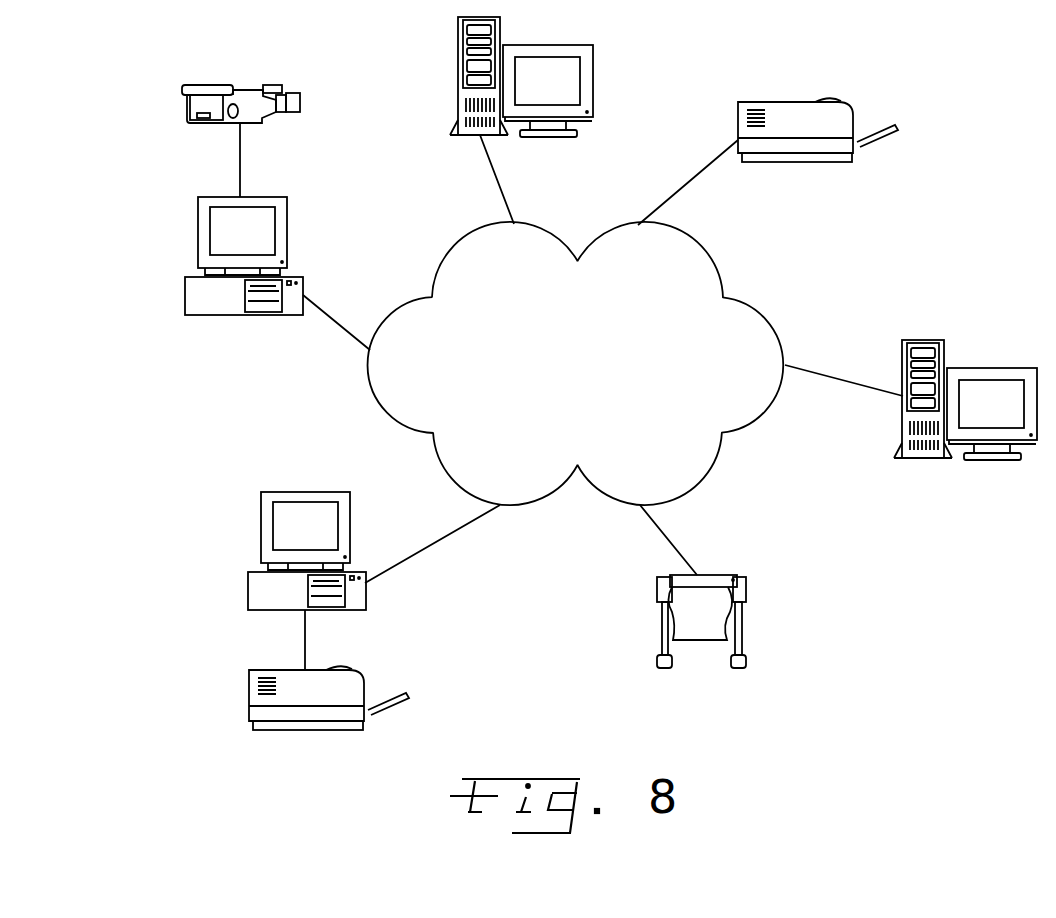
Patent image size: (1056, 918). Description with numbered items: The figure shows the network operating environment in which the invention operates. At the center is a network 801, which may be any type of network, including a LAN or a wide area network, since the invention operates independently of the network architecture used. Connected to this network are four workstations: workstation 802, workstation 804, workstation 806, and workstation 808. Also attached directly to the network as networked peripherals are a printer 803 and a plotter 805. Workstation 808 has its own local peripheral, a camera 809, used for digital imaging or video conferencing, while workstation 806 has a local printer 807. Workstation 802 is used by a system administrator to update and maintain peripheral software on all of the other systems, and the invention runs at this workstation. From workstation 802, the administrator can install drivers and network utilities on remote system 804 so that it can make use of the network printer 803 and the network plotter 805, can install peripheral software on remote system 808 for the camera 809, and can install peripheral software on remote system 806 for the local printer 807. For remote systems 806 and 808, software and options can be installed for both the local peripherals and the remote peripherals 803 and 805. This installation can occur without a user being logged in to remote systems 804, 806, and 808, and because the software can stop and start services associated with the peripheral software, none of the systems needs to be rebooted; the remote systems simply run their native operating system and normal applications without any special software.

The network 801 is at (605, 380).
The workstation 802 is at (593, 58).
The printer 803 is at (791, 100).
The workstation 804 is at (965, 423).
The plotter 805 is at (746, 585).
The workstation 806 is at (278, 551).
The local printer 807 is at (289, 710).
The workstation 808 is at (287, 229).
The camera 809 is at (187, 113).